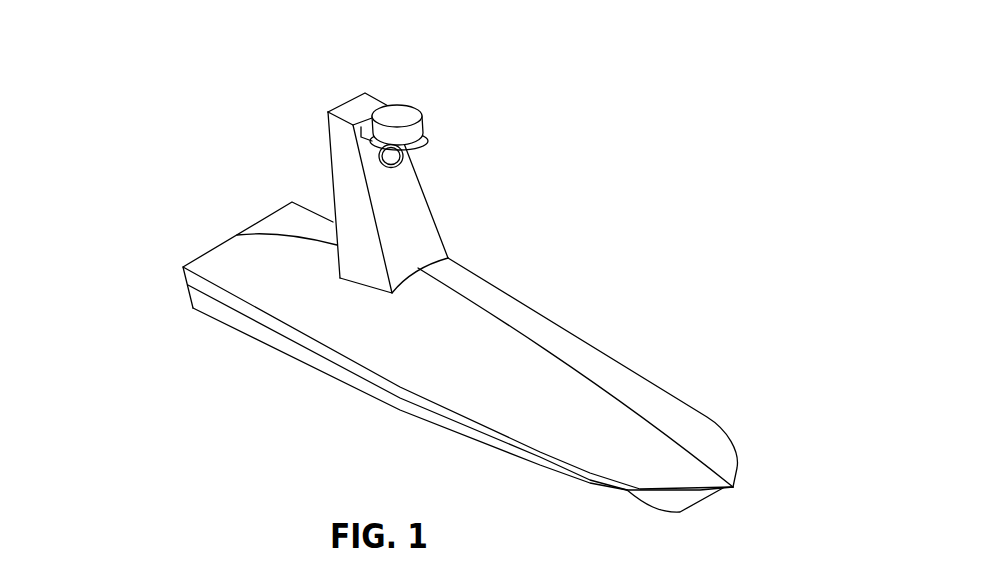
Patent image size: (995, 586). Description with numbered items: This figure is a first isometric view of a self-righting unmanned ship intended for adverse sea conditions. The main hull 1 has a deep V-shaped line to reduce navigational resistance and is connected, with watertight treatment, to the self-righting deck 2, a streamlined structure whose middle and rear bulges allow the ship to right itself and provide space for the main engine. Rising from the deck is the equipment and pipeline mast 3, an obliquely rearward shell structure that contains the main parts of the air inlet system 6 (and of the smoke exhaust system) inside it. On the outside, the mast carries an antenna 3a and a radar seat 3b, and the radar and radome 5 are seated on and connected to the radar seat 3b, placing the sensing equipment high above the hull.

The main hull 1 is at (399, 357).
The self-righting deck 2 is at (528, 333).
The equipment and pipeline mast 3 is at (329, 154).
The antenna 3a is at (365, 93).
The radar seat 3b is at (425, 141).
The radar and radome 5 is at (395, 117).
The air inlet system 6 is at (402, 163).